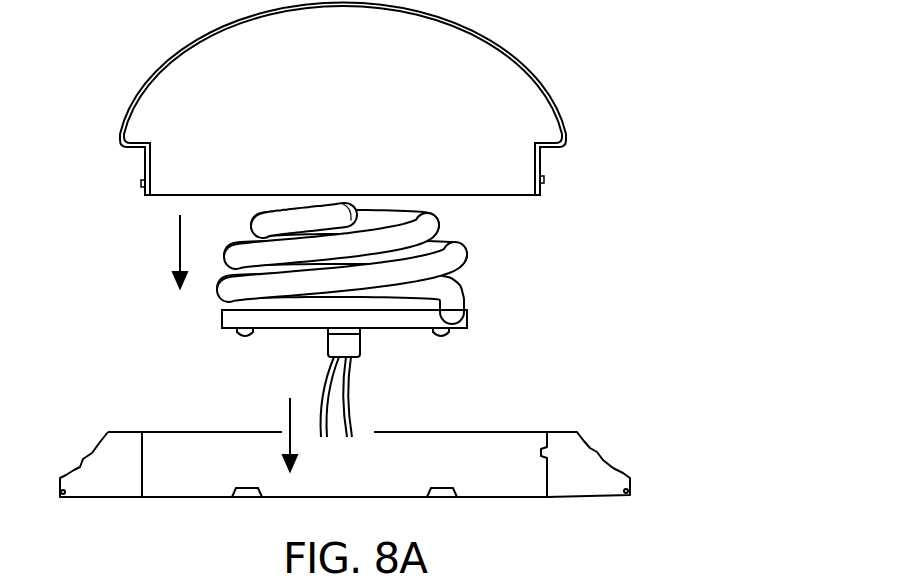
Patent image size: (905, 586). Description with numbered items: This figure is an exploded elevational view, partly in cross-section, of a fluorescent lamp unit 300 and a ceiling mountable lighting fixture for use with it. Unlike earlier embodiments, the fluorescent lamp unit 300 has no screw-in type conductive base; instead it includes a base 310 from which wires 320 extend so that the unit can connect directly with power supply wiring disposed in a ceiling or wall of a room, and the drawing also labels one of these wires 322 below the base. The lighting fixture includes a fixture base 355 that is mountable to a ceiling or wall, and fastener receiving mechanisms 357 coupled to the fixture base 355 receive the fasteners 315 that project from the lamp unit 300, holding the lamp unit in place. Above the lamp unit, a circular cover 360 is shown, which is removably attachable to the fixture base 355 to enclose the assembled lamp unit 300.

The circular cover 360 is at (492, 88).
The fluorescent lamp unit 300 is at (206, 316).
The fasteners 315 is at (448, 338).
The base 310 is at (340, 343).
The wires 320 is at (352, 370).
The wire 322 is at (348, 417).
The fixture base 355 is at (565, 448).
The fastener receiving mechanisms 357 is at (245, 500).